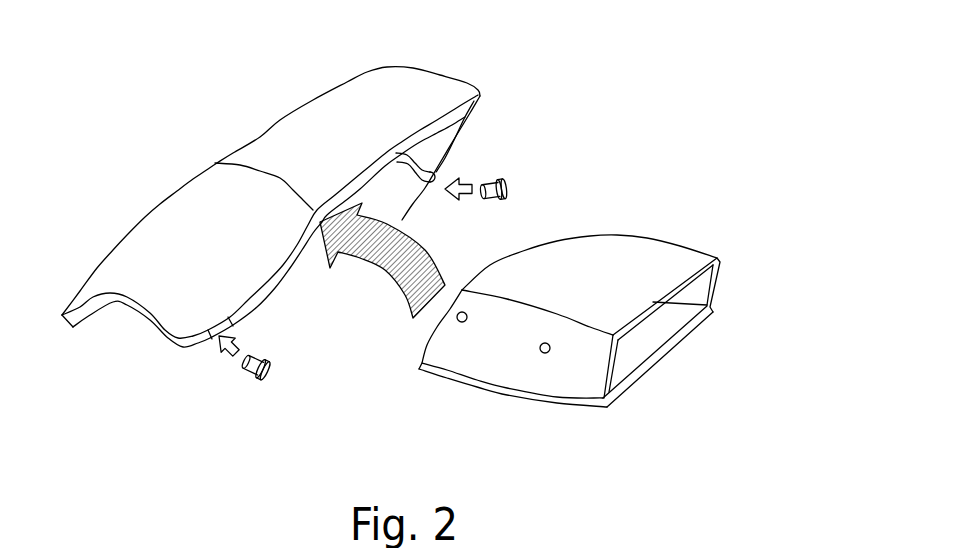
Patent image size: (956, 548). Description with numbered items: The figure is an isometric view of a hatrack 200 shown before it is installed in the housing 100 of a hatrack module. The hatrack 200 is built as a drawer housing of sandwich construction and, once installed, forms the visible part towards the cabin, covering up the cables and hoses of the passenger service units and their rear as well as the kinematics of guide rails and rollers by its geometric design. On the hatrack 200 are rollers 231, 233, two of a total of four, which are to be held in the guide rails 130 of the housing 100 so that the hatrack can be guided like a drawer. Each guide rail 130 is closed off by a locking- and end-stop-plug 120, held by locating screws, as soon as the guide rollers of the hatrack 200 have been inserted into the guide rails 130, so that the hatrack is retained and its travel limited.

The housing 100 is at (433, 95).
The locking- and end-stop-plug 120 is at (508, 180).
The guide rails 130 is at (415, 172).
The hatrack 200 is at (735, 265).
The roller 231 is at (462, 322).
The roller 233 is at (545, 353).